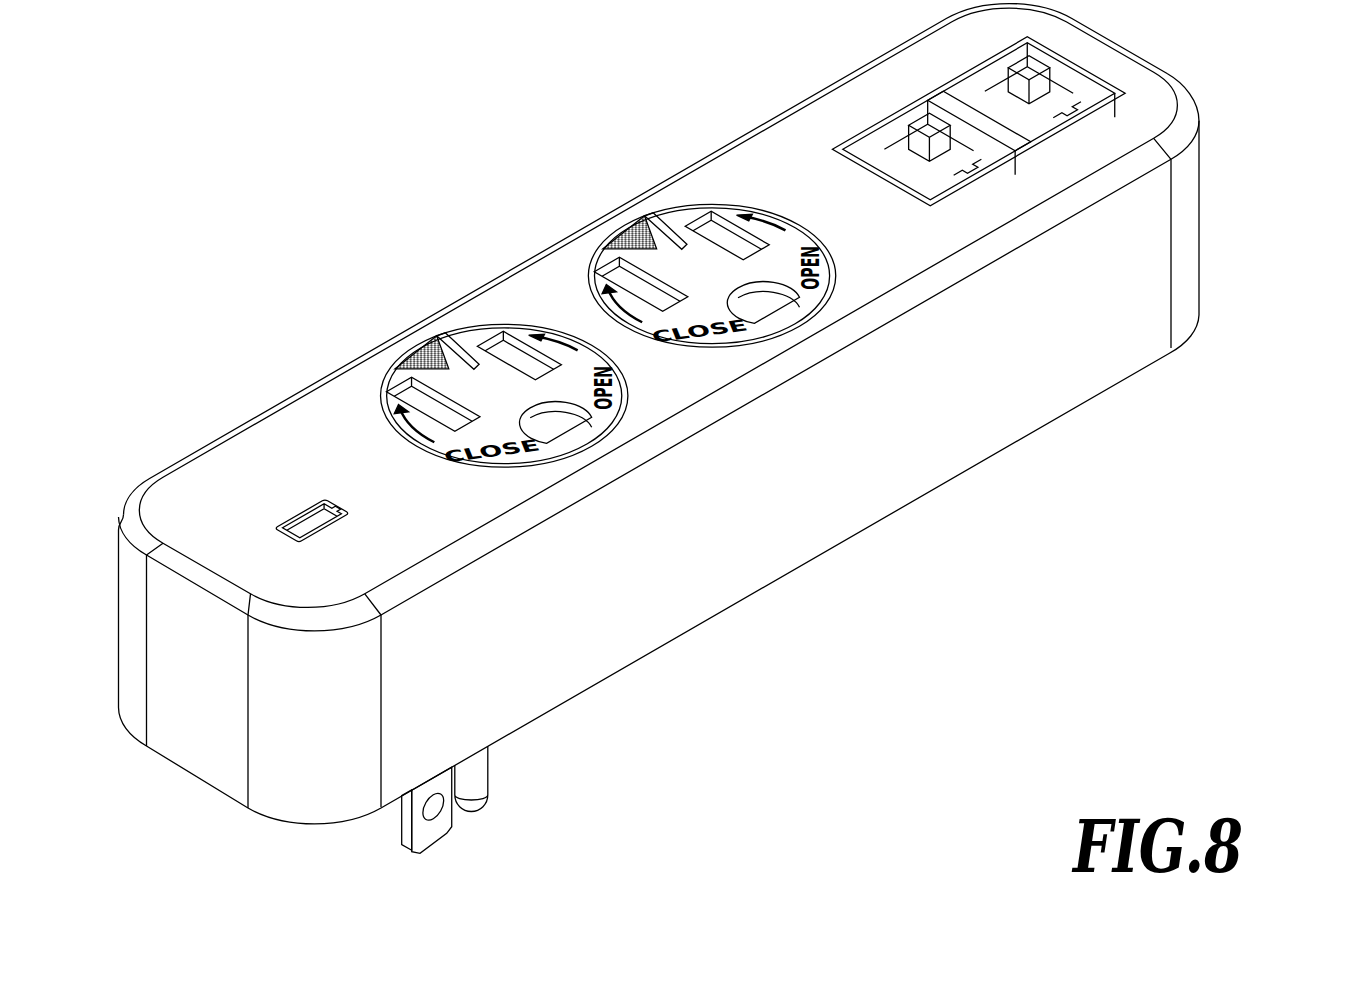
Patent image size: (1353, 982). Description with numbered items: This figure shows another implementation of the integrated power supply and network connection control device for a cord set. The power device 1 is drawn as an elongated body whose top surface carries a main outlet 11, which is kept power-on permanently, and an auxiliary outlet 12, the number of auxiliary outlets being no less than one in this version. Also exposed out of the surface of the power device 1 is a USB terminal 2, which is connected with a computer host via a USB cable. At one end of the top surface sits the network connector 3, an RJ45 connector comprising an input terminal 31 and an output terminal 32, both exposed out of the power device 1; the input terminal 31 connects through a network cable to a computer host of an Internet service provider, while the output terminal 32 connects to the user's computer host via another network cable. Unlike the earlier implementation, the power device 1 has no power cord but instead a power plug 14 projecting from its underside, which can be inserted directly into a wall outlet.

The power device 1 is at (568, 224).
The USB terminal 2 is at (308, 527).
The network connector 3 is at (1327, 408).
The input terminal 31 is at (960, 160).
The output terminal 32 is at (1055, 101).
The main outlet 11 is at (620, 415).
The auxiliary outlets 12 is at (830, 298).
The power plug 14 is at (443, 820).